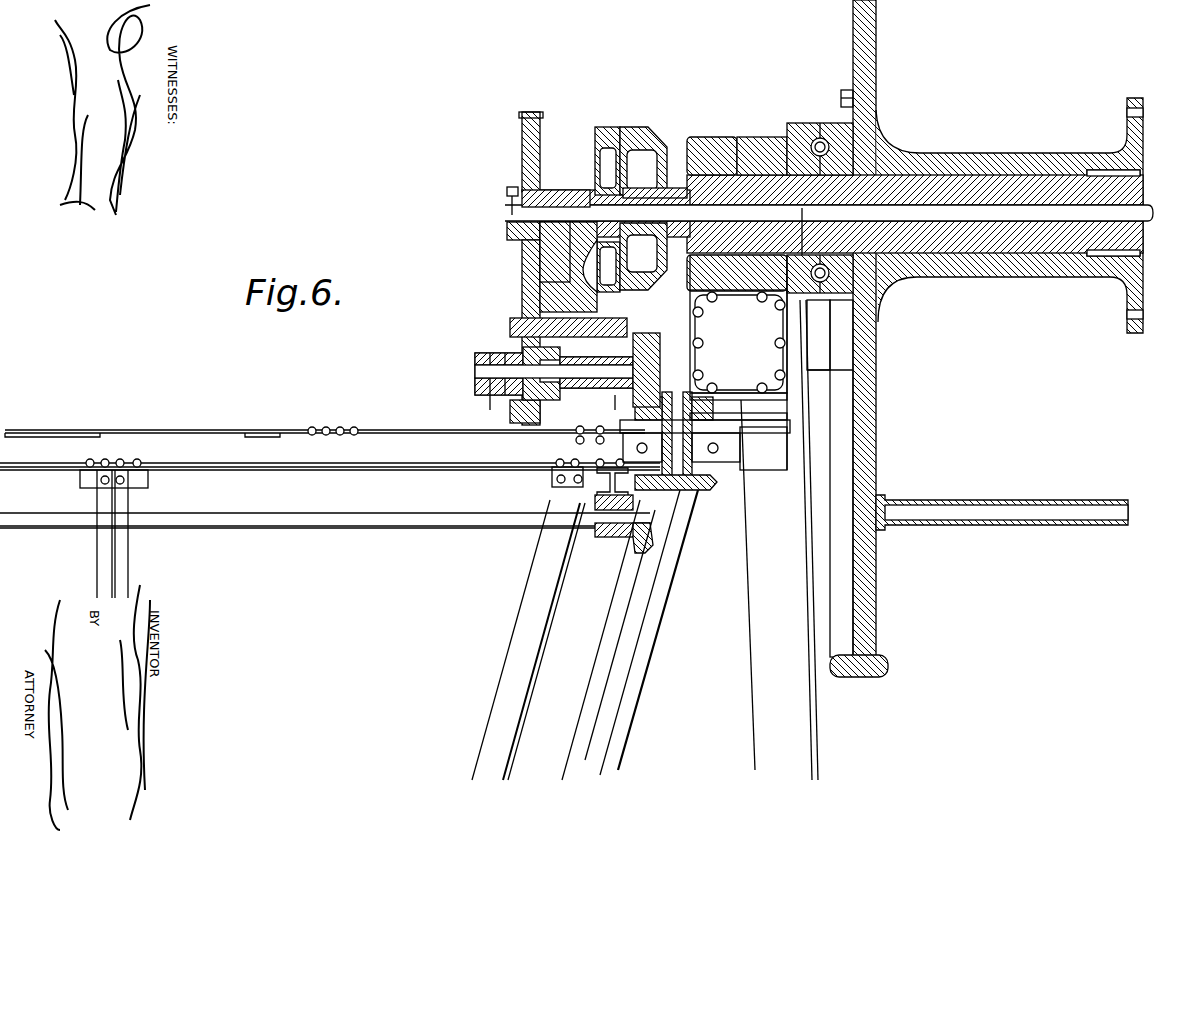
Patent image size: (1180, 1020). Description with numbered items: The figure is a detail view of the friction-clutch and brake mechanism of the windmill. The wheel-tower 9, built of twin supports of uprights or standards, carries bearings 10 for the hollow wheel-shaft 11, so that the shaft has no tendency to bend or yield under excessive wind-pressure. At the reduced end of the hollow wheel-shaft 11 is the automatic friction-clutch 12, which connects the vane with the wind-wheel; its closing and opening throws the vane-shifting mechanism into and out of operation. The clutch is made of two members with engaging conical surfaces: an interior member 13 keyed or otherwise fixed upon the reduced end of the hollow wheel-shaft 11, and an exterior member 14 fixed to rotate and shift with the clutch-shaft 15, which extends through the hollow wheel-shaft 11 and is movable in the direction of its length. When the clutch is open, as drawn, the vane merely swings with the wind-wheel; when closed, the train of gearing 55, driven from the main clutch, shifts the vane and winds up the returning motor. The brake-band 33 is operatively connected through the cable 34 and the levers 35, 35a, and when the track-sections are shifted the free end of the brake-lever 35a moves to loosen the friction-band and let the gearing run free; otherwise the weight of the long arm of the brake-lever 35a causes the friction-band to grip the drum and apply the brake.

The wheel-tower 9 is at (605, 655).
The bearings 10 is at (737, 137).
The hollow wheel-shaft 11 is at (983, 190).
The automatic friction-clutch 12 is at (628, 127).
The interior clutch member 13 is at (640, 167).
The exterior clutch member 14 is at (660, 147).
The clutch-shaft 15 is at (505, 213).
The brake-band 33 is at (540, 392).
The cable 34 is at (806, 368).
The lever 35 is at (782, 137).
The brake-lever 35a is at (548, 268).
The train of gearing 55 is at (520, 151).